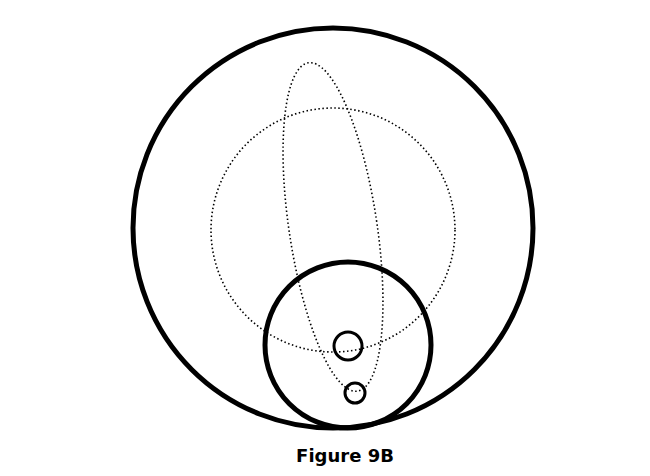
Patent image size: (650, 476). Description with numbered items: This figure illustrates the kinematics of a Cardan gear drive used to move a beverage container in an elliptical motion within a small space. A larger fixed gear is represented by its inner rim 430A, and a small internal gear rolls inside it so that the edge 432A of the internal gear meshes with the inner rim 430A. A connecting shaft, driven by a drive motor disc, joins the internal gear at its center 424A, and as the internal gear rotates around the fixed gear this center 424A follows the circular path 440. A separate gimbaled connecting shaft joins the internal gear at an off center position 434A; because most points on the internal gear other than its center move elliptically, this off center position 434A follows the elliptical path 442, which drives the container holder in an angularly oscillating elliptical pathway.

The inner rim 430A is at (452, 59).
The circular path 440 is at (218, 174).
The elliptical path 442 is at (281, 83).
The edge 432A is at (434, 332).
The center 424A is at (334, 344).
The off center position 434A is at (343, 392).